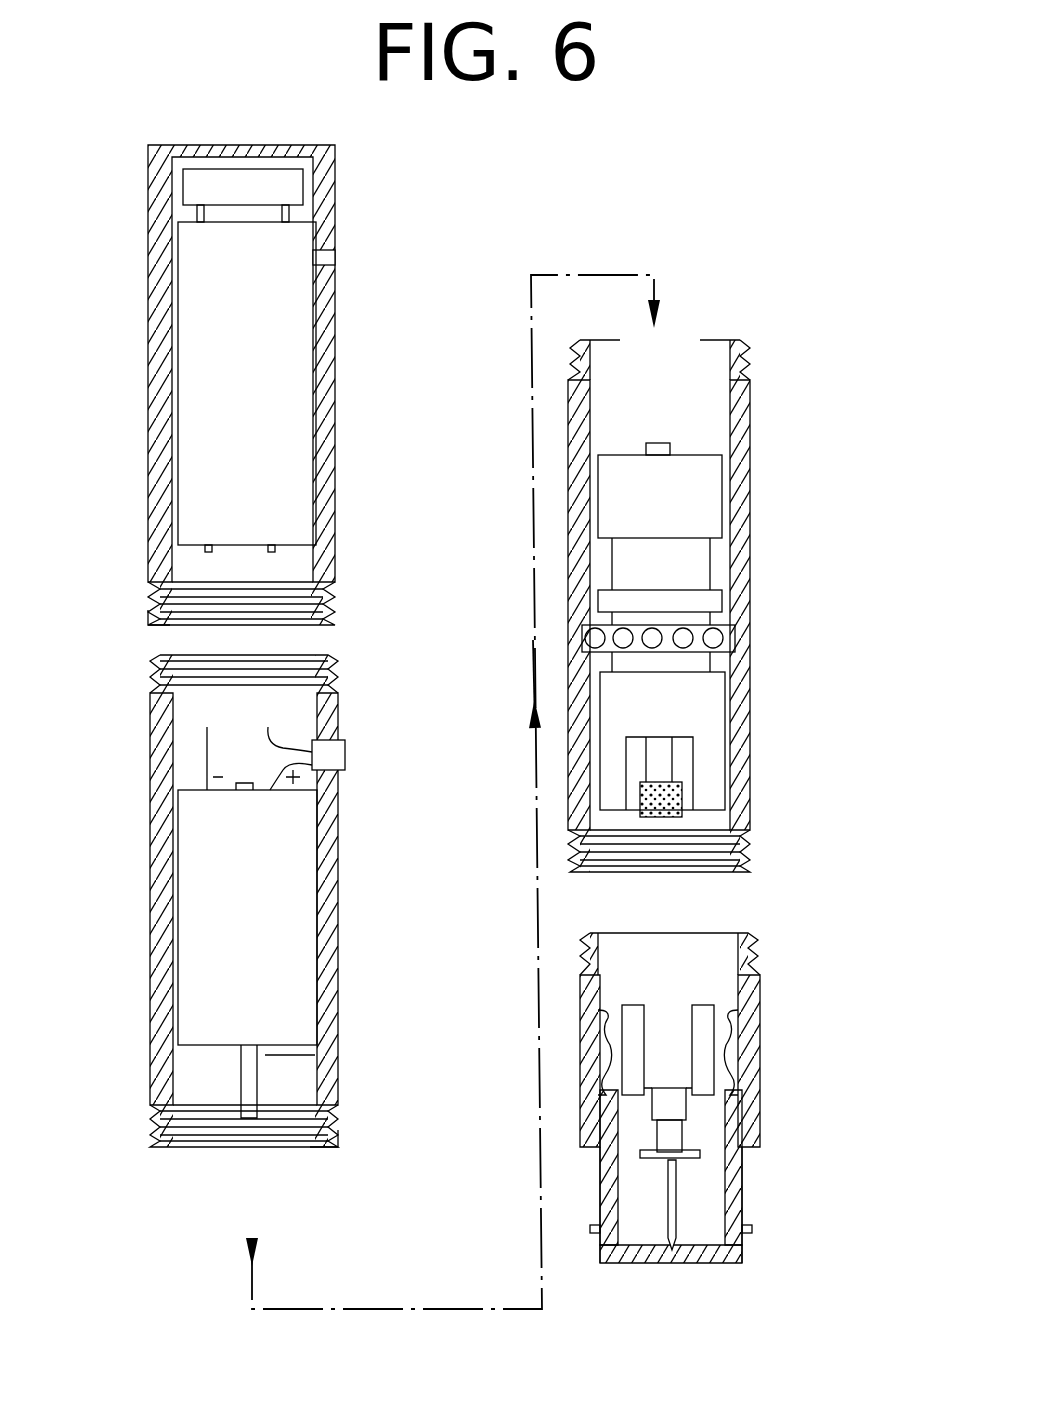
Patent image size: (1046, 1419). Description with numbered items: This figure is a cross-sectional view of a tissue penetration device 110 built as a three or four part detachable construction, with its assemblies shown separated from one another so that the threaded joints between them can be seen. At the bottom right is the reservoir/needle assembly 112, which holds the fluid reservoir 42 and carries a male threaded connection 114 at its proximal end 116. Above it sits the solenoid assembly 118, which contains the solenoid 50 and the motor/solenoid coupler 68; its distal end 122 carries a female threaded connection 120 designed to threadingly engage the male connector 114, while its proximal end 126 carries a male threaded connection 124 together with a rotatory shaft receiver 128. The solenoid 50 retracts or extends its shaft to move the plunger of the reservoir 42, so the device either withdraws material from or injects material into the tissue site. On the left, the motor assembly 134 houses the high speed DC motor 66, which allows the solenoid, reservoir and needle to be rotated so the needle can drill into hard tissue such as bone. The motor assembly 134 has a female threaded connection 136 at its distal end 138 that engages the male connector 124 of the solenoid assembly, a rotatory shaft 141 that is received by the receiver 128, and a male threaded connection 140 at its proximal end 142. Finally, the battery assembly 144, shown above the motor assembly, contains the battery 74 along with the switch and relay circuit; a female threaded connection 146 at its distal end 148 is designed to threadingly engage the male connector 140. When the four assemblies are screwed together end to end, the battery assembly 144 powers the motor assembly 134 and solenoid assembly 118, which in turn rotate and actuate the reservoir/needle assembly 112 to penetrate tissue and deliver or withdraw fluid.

The tissue penetration device 110 is at (633, 143).
The battery assembly 144 is at (362, 308).
The battery 74 is at (268, 376).
The female threaded connection 146 is at (330, 595).
The distal end 148 is at (123, 611).
The proximal end 142 is at (128, 660).
The motor assembly 134 is at (362, 878).
The male threaded connection 140 is at (345, 748).
The high speed DC motor 66 is at (268, 901).
The rotatory shaft 141 is at (250, 1122).
The female threaded connection 136 is at (325, 1120).
The distal end 138 is at (325, 1170).
The proximal end 126 is at (742, 313).
The male threaded connection 124 is at (745, 370).
The solenoid assembly 118 is at (790, 605).
The rotatory shaft receiver 128 is at (658, 443).
The motor/solenoid coupler 68 is at (688, 501).
The solenoid 50 is at (690, 578).
The female threaded connection 120 is at (752, 835).
The distal end 122 is at (772, 865).
The proximal end 116 is at (775, 932).
The male threaded connection 114 is at (738, 950).
The reservoir/needle assembly 112 is at (800, 1000).
The fluid reservoir 42 is at (693, 1063).